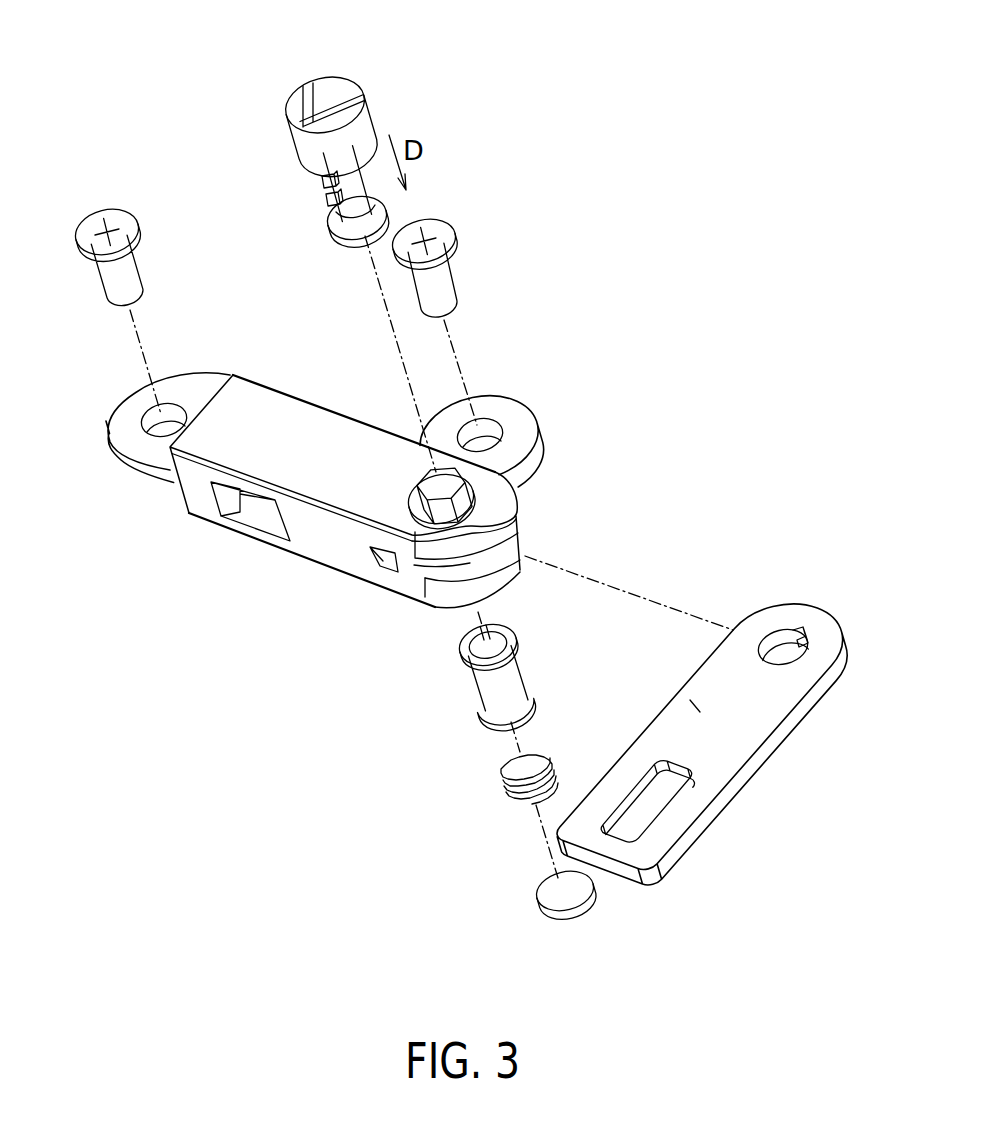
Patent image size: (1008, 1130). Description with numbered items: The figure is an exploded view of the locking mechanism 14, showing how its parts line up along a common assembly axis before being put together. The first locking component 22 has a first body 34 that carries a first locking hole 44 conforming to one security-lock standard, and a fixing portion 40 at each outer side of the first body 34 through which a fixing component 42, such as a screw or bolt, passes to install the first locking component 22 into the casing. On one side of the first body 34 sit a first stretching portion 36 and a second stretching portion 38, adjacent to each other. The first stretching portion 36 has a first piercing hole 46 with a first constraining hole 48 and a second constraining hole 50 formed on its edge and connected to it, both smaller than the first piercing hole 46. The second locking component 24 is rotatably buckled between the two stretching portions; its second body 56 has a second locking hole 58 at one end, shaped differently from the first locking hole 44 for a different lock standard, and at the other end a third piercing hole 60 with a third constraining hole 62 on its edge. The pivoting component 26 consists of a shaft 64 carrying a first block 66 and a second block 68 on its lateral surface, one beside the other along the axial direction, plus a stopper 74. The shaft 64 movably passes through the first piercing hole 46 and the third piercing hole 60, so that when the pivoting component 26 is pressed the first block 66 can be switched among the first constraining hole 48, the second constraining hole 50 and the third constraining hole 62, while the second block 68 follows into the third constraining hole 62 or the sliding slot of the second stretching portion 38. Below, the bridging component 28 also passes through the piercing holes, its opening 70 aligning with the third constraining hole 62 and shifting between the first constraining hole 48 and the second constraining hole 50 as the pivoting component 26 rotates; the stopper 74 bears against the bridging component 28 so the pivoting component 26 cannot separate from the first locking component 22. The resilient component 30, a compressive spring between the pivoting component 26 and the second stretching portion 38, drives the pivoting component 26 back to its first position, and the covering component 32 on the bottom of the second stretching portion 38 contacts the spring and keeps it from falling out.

The locking mechanism 14 is at (612, 70).
The first locking component 22 is at (373, 718).
The second locking component 24 is at (741, 600).
The pivoting component 26 is at (231, 166).
The bridging component 28 is at (481, 678).
The resilient component 30 is at (510, 782).
The covering component 32 is at (545, 893).
The first body 34 is at (315, 548).
The first stretching portion 36 is at (396, 545).
The second stretching portion 38 is at (413, 592).
The fixing portion 40 is at (505, 400).
The fixing component 42 is at (107, 215).
The first locking hole 44 is at (250, 520).
The first piercing hole 46 is at (457, 517).
The first constraining hole 48 is at (412, 497).
The second constraining hole 50 is at (467, 477).
The second body 56 is at (688, 703).
The second locking hole 58 is at (660, 792).
The third piercing hole 60 is at (783, 660).
The third constraining hole 62 is at (797, 633).
The shaft 64 is at (323, 176).
The first block 66 is at (328, 196).
The second block 68 is at (331, 219).
The opening 70 is at (500, 633).
The stopper 74 is at (333, 240).